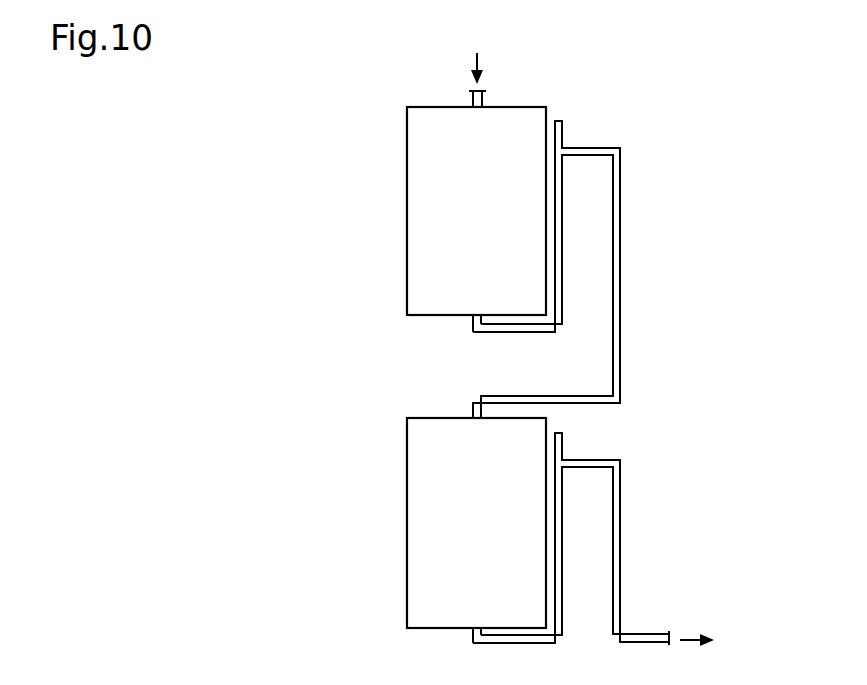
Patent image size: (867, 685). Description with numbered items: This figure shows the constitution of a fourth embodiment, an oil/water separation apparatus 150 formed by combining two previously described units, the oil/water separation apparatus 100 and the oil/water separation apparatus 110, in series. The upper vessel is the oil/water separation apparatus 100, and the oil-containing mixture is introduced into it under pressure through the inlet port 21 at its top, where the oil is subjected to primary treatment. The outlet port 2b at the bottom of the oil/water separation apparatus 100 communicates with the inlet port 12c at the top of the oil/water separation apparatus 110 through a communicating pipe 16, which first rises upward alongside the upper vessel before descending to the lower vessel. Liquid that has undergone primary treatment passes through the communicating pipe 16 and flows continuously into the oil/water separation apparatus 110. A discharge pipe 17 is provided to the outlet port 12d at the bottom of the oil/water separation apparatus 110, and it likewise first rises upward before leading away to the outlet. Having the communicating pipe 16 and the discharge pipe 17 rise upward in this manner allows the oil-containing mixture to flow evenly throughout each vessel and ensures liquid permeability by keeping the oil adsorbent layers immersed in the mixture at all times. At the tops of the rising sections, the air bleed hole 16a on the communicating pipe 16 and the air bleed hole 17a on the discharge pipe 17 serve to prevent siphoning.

The oil/water separation apparatus 150 is at (563, 103).
The oil/water separation apparatus 100 is at (413, 218).
The inlet port 21 is at (472, 97).
The outlet port 2b is at (472, 323).
The communicating pipe 16 is at (557, 274).
The air bleed hole 16a is at (557, 132).
The inlet port 12c is at (473, 415).
The oil/water separation apparatus 110 is at (424, 538).
The outlet port 12d is at (472, 633).
The discharge pipe 17 is at (557, 566).
The air bleed hole 17a is at (557, 444).